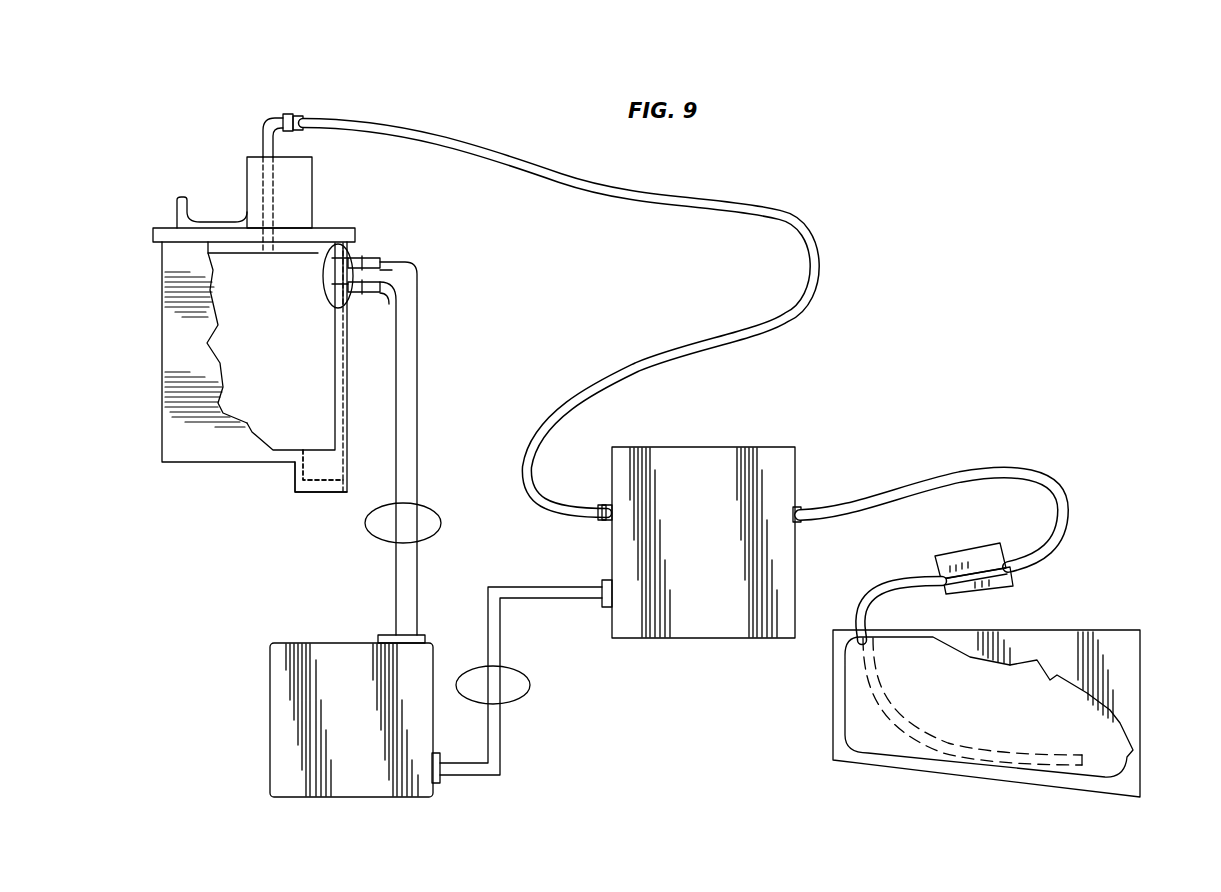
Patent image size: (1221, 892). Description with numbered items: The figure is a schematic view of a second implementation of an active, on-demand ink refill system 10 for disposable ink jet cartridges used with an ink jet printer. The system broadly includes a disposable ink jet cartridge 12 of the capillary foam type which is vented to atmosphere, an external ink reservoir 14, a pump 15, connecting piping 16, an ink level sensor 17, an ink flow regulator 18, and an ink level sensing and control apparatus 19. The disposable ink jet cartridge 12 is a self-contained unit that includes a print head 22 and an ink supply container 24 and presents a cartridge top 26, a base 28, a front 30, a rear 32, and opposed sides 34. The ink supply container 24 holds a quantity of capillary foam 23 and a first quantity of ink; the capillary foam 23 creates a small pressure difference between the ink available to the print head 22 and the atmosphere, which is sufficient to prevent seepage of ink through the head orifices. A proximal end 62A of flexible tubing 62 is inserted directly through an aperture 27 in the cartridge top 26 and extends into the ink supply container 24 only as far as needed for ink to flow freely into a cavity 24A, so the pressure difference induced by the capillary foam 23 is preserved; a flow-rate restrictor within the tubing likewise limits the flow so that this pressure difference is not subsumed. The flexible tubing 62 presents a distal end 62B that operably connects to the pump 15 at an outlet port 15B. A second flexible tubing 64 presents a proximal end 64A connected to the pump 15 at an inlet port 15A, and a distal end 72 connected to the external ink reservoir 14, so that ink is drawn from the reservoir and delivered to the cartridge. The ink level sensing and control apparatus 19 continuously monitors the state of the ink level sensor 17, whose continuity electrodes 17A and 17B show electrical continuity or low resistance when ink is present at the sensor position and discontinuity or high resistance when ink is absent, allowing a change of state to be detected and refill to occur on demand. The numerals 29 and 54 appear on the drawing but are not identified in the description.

The ink refill system 10 is at (838, 423).
The disposable ink jet cartridge 12 is at (167, 203).
The external ink reservoir 14 is at (1019, 681).
The pump 15 is at (730, 510).
The inlet port 15A is at (823, 506).
The outlet port 15B is at (607, 504).
The connecting piping 16 is at (787, 315).
The ink level sensor 17 is at (408, 278).
The continuity electrode 17A is at (378, 298).
The continuity electrode 17B is at (370, 261).
The ink flow regulator 18 is at (980, 556).
The ink level sensing and control apparatus 19 is at (270, 708).
The print head 22 is at (280, 502).
The capillary foam 23 is at (243, 366).
The ink supply container 24 is at (215, 249).
The cavity 24A is at (179, 340).
The cartridge top 26 is at (250, 210).
The aperture 27 is at (262, 158).
The base 28 is at (203, 380).
The sump wall 29 is at (318, 469).
The front 30 is at (347, 372).
The rear 32 is at (167, 413).
The opposed sides 34 is at (203, 380).
The tubing connection 54 is at (440, 501).
The flexible tubing 62 is at (559, 318).
The proximal end 62A is at (327, 117).
The distal end 62B is at (570, 520).
The flexible tubing 64 is at (870, 580).
The proximal end 64A is at (830, 500).
The distal end 72 is at (1082, 760).